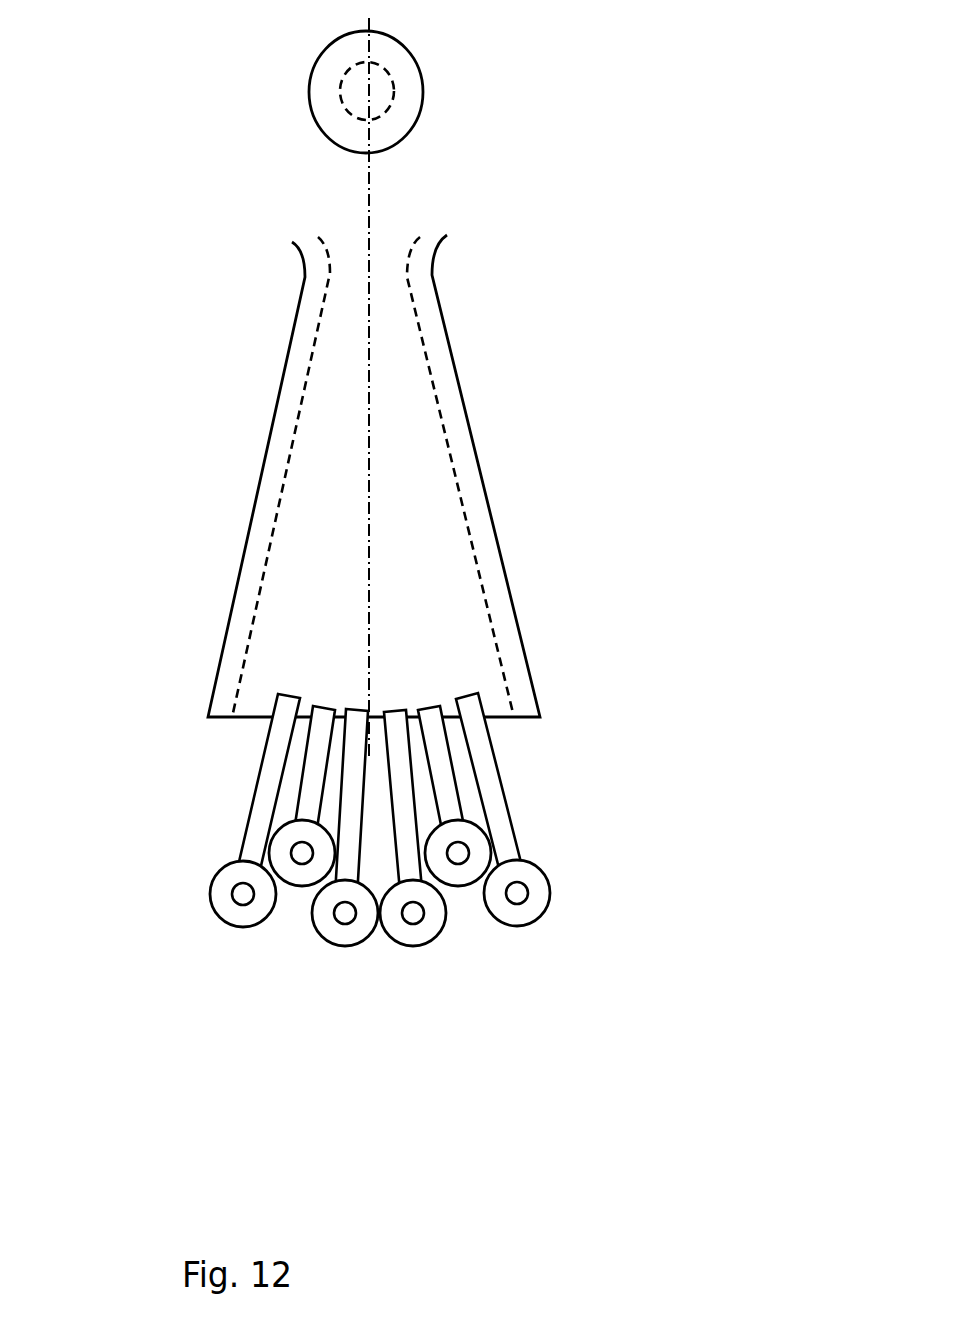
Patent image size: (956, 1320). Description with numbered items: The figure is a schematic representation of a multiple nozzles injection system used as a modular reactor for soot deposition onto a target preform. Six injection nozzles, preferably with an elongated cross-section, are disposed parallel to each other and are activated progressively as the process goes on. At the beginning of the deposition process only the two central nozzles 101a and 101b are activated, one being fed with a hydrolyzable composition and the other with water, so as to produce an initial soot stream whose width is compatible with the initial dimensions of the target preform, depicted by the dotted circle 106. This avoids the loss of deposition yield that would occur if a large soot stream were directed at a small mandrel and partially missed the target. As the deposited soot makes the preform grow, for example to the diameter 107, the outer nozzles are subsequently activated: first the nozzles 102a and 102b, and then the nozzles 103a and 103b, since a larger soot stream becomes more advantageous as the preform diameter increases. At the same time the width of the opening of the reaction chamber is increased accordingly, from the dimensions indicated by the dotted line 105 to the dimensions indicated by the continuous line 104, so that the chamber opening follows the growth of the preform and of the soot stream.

The central nozzle 101a is at (345, 925).
The central nozzle 101b is at (417, 920).
The outer nozzle 102a is at (297, 877).
The outer nozzle 102b is at (462, 865).
The outer nozzle 103a is at (232, 903).
The outer nozzle 103b is at (527, 903).
The continuous line 104 is at (462, 387).
The dotted line 105 is at (480, 568).
The dotted circle 106 is at (387, 113).
The preform diameter 107 is at (400, 40).